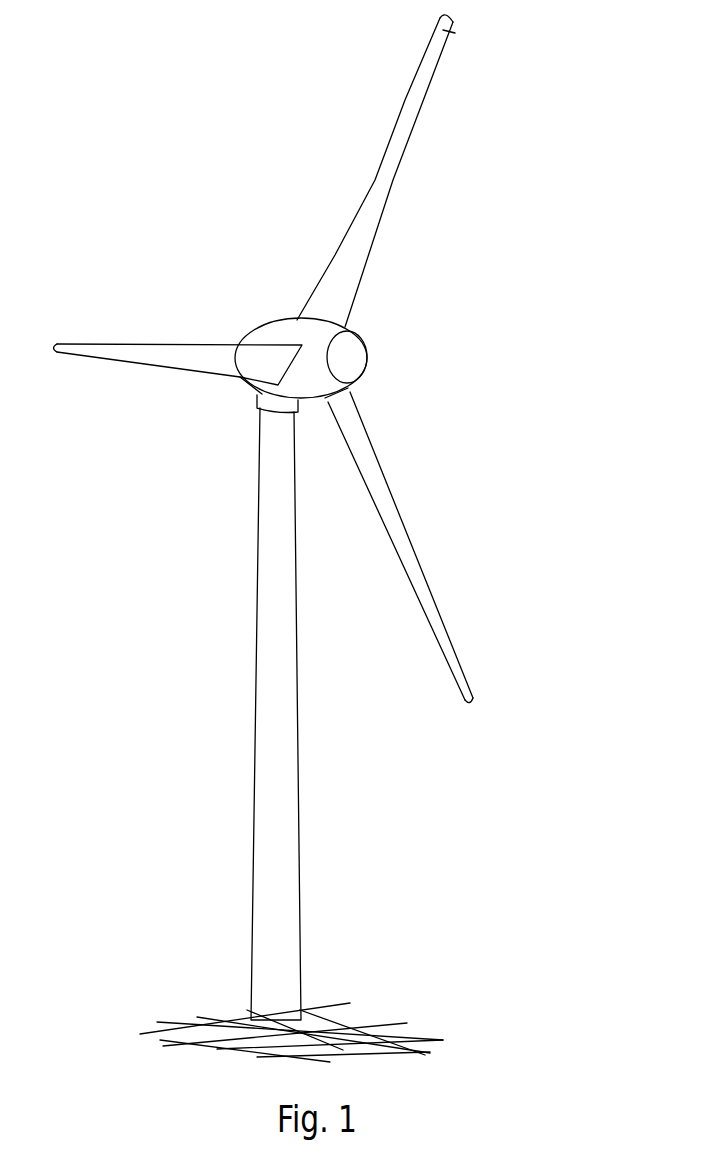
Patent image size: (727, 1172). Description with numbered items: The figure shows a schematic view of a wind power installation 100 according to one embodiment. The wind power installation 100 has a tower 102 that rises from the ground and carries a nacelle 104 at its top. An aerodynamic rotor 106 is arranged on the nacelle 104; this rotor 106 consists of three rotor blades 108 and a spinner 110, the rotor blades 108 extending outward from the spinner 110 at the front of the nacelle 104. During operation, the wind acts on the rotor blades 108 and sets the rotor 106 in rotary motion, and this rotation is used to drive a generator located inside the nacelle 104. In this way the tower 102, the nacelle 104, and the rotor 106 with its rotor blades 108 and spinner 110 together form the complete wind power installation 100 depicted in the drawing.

The wind power installation 100 is at (220, 471).
The tower 102 is at (282, 808).
The nacelle 104 is at (270, 330).
The aerodynamic rotor 106 is at (428, 286).
The rotor blade 108 is at (400, 132).
The spinner 110 is at (353, 352).